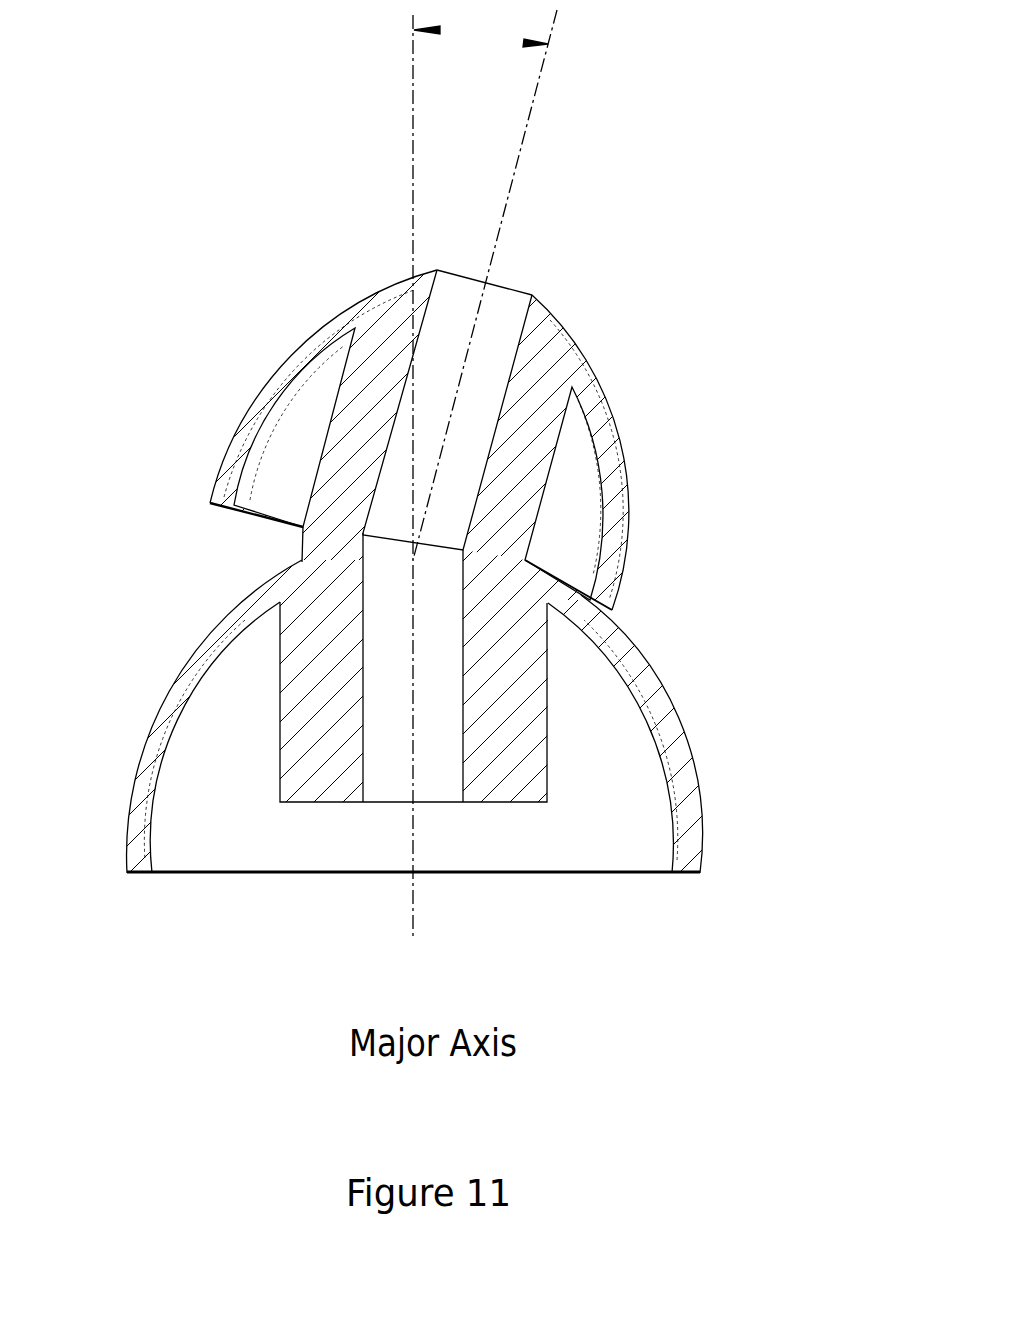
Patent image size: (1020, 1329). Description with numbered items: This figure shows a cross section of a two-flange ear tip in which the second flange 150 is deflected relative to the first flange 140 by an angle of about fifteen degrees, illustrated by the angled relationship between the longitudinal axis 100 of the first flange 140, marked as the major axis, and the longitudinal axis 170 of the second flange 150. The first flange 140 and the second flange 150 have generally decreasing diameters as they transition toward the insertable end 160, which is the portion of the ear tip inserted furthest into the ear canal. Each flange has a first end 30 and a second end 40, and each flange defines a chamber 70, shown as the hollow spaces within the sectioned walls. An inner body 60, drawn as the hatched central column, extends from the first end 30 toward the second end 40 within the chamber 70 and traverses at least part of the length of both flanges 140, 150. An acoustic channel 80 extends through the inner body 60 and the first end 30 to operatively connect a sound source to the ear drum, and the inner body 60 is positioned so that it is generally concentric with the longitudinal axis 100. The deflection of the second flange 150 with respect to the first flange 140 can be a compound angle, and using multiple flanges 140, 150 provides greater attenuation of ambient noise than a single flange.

The longitudinal axis 100 is at (397, 129).
The longitudinal axis of second flange 170 is at (542, 123).
The first end 30 is at (285, 568).
The insertable end 160 is at (368, 266).
The acoustic channel 80 is at (542, 282).
The inner body 60 is at (553, 369).
The second flange 150 is at (626, 396).
The chamber 70 is at (275, 437).
The second end 40 is at (226, 514).
The first flange 140 is at (691, 707).